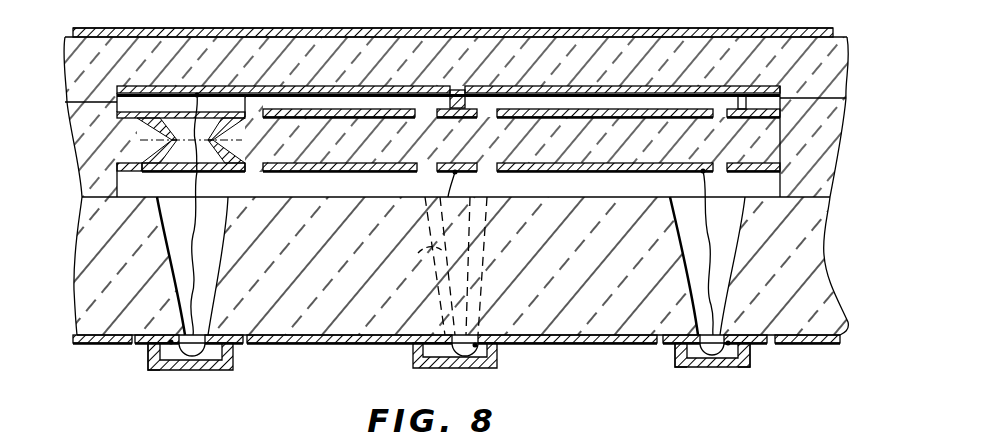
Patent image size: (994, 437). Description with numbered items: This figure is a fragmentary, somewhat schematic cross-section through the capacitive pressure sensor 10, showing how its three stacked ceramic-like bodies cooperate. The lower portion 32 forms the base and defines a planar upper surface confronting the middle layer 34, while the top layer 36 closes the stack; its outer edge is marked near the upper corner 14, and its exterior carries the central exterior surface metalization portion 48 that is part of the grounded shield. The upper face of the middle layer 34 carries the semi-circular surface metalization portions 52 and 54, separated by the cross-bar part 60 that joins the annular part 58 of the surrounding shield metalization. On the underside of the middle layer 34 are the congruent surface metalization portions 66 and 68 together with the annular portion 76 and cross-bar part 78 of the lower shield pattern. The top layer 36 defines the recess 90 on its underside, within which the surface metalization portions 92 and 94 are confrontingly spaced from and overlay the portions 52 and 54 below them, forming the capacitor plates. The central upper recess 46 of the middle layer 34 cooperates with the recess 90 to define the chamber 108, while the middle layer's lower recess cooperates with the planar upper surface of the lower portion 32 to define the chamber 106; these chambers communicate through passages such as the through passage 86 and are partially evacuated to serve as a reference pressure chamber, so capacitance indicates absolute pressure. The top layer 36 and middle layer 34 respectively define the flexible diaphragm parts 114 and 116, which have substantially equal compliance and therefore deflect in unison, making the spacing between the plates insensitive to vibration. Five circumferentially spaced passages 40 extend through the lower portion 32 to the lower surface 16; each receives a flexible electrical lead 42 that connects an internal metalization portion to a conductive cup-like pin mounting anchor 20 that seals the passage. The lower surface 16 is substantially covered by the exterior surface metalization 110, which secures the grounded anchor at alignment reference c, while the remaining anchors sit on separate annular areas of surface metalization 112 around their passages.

The sensor 10 is at (228, 16).
The upper surface 14 is at (846, 36).
The lower surface 16 is at (806, 344).
The pin mounting anchor 20 is at (160, 372).
The lower portion 32 is at (822, 278).
The middle layer 34 is at (827, 142).
The top layer 36 is at (826, 66).
The passage 40 is at (211, 262).
The flexible electrical lead 42 is at (197, 236).
The central upper recess 46 is at (781, 90).
The central exterior surface metalization portion 48 is at (710, 27).
The surface metalization portion 52 is at (668, 118).
The surface metalization portion 54 is at (302, 91).
The annular part 58 is at (130, 112).
The cross-bar part 60 is at (466, 98).
The surface metalization portion 66 is at (615, 178).
The surface metalization portion 68 is at (372, 169).
The annular portion 76 is at (752, 168).
The cross-bar part 78 is at (430, 169).
The through passage 86 is at (222, 172).
The recess 90 is at (748, 88).
The surface metalization portion 92 is at (716, 68).
The surface metalization portion 94 is at (229, 91).
The chamber 106 is at (570, 196).
The chamber 108 is at (404, 100).
The exterior surface metalization 110 is at (115, 345).
The annular area of surface metalization 112 is at (160, 362).
The flexible diaphragm part 114 is at (610, 47).
The flexible diaphragm part 116 is at (568, 153).